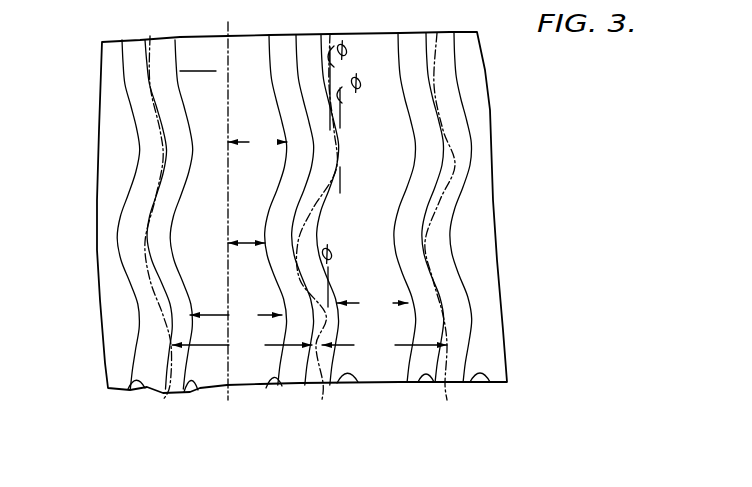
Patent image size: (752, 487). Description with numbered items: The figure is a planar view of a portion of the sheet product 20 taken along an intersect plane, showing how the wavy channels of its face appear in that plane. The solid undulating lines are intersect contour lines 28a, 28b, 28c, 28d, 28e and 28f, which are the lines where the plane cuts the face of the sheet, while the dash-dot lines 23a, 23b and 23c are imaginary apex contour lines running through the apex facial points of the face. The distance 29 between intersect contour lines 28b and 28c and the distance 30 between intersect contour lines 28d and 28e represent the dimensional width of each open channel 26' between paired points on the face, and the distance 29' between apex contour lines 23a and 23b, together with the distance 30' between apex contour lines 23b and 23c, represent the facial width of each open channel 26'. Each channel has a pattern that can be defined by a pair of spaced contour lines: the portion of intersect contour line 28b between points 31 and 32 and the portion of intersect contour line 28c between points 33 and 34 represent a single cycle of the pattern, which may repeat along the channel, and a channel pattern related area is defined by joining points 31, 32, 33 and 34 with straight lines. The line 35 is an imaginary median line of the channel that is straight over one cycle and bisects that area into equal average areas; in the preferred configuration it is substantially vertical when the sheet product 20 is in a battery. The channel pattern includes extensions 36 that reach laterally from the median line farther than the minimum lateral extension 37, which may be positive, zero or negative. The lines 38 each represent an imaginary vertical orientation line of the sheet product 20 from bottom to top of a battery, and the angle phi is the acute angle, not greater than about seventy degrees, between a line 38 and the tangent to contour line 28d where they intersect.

The sheet product 20 is at (512, 151).
The imaginary apex contour line 23a is at (164, 402).
The imaginary apex contour line 23b is at (322, 401).
The imaginary apex contour line 23c is at (447, 401).
The open channel 26' is at (198, 59).
The intersect contour line 28a is at (138, 389).
The intersect contour line 28b is at (193, 393).
The intersect contour line 28c is at (272, 393).
The intersect contour line 28d is at (343, 378).
The intersect contour line 28e is at (427, 380).
The intersect contour line 28f is at (482, 382).
The distance between intersect contour lines 29 is at (236, 315).
The distance between apex contour lines 29' is at (242, 345).
The distance between intersect contour lines 30 is at (372, 304).
The distance between apex contour lines 30' is at (384, 345).
The pattern cycle point 31 is at (176, 87).
The pattern cycle point 32 is at (192, 214).
The pattern cycle point 33 is at (260, 210).
The pattern cycle point 34 is at (271, 83).
The imaginary median line 35 is at (234, 415).
The lateral extension 36 is at (257, 141).
The minimum lateral extension 37 is at (244, 241).
The imaginary vertical orientation line 38 is at (340, 68).